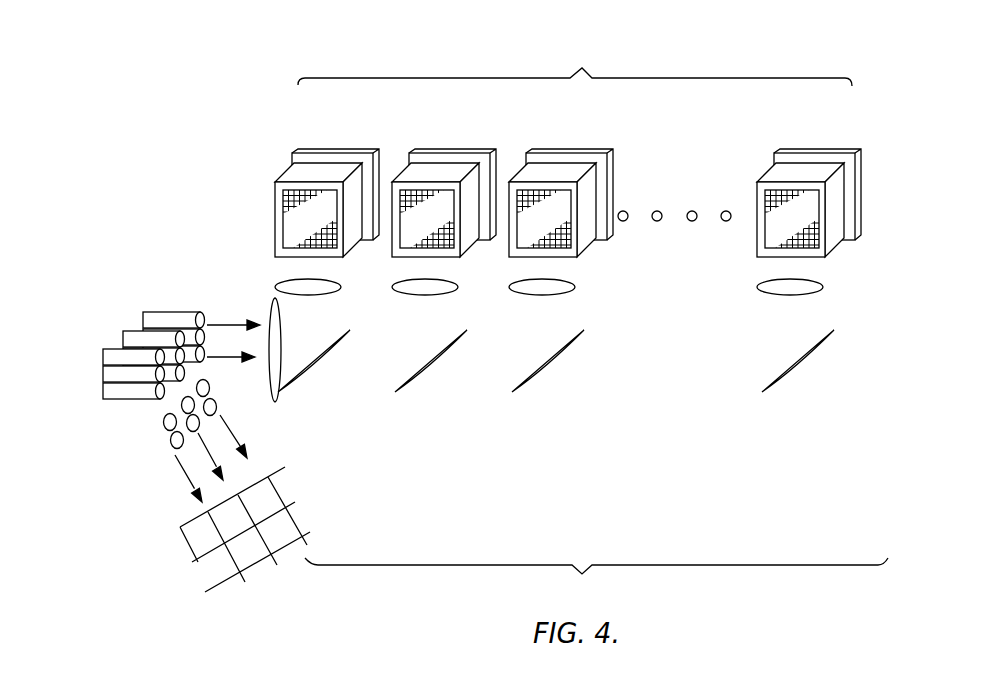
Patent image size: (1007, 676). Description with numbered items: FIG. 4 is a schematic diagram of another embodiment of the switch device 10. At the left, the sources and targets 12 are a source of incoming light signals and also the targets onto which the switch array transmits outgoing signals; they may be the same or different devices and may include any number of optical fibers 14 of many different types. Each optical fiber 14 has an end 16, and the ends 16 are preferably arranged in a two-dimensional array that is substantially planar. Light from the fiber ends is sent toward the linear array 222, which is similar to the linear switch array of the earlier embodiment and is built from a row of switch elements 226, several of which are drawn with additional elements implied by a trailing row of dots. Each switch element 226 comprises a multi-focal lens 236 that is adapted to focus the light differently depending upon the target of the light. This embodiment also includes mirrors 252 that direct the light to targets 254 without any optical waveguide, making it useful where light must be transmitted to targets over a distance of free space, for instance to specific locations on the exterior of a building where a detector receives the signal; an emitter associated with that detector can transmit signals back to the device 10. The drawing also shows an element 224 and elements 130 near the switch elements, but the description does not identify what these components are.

The device 10 is at (242, 126).
The sources and targets 12 is at (156, 328).
The optical fibers 14 is at (155, 328).
The fiber end 16 is at (208, 318).
The beam splitter mirror 130 is at (556, 389).
The linear array 222 is at (582, 68).
The collimating lens 224 is at (268, 302).
The switch element 226 is at (568, 173).
The multi-focal lens 236 is at (757, 290).
The mirrors 252 is at (163, 440).
The targets 254 is at (228, 558).